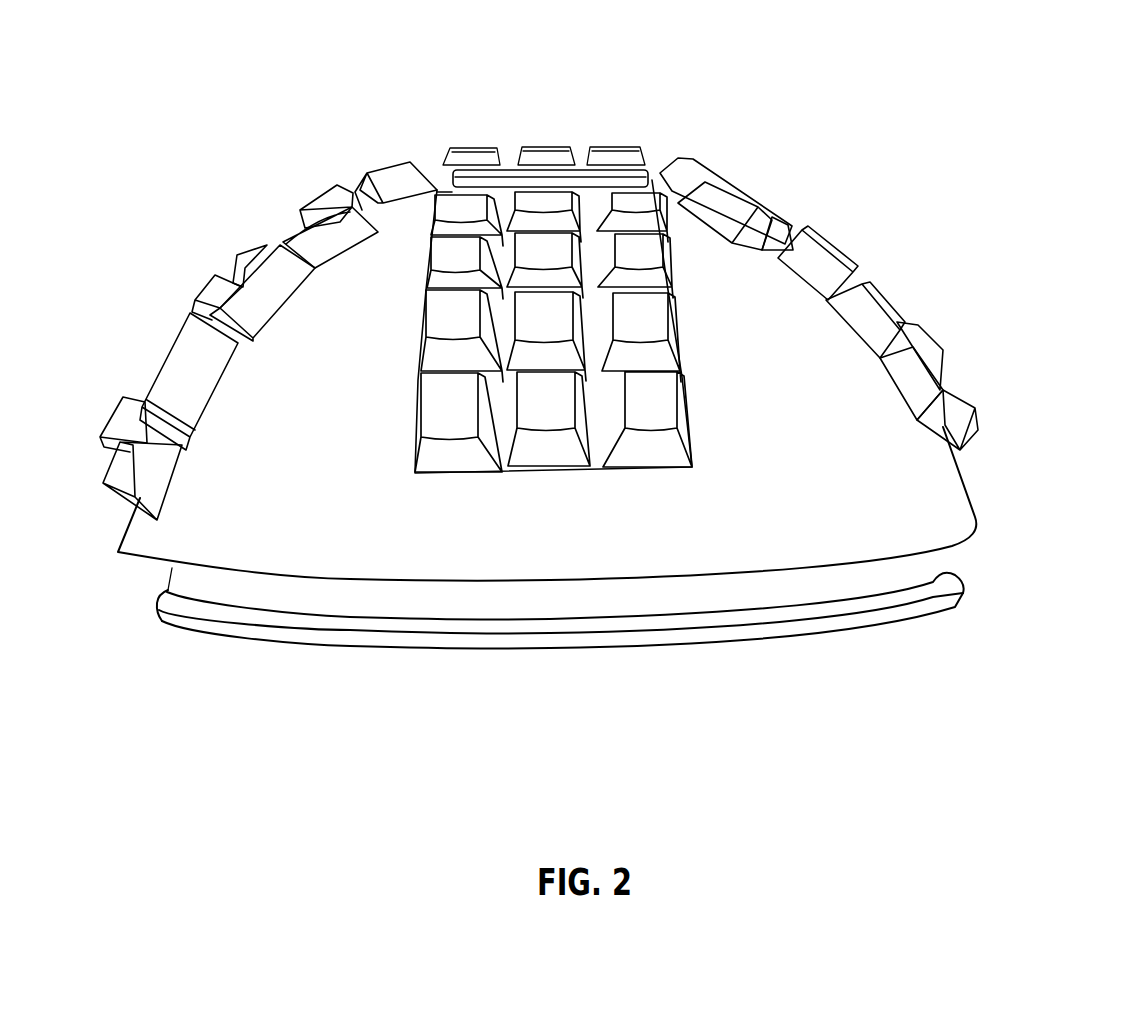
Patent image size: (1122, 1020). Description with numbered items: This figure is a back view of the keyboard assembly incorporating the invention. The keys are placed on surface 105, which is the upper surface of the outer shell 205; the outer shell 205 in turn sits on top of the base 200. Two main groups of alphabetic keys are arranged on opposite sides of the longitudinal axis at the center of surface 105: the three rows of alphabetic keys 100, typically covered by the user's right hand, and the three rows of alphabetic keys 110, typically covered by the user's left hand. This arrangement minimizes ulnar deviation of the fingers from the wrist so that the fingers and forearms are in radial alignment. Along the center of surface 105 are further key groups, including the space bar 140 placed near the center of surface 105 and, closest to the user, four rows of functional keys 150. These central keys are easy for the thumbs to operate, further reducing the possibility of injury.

The alphabetic keys 100 is at (860, 267).
The surface 105 is at (953, 488).
The alphabetic keys 110 is at (187, 288).
The space bar 140 is at (648, 168).
The functional keys 150 is at (633, 473).
The base 200 is at (960, 592).
The outer shell 205 is at (920, 560).